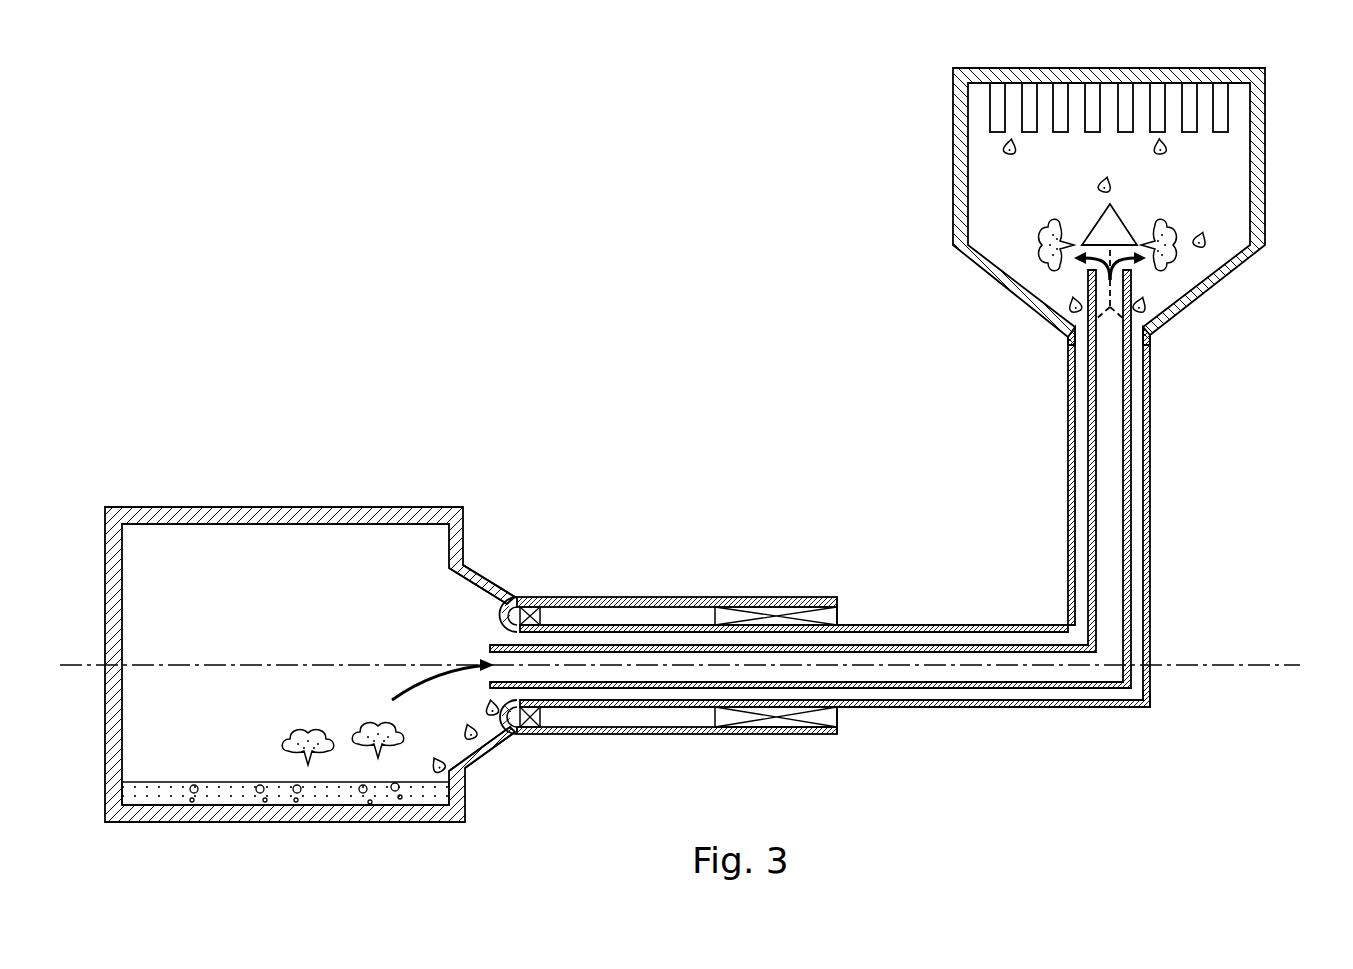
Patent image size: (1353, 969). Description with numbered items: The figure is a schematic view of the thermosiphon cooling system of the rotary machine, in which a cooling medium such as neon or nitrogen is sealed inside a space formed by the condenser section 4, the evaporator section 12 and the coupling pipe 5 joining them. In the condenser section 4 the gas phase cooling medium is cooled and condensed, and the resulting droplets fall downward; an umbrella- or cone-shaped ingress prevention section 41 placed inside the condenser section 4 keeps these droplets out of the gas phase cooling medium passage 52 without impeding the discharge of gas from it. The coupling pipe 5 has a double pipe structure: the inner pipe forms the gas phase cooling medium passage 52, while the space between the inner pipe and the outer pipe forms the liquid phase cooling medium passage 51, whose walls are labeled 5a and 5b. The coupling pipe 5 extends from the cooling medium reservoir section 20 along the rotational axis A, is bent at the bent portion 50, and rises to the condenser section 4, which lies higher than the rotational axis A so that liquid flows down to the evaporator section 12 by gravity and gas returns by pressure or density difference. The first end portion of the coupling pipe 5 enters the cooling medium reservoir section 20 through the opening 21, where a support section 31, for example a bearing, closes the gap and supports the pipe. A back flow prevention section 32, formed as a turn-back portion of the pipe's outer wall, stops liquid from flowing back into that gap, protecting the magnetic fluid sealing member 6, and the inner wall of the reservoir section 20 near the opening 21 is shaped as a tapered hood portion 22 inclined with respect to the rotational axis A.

The condenser section 4 is at (1267, 148).
The ingress prevention section 41 is at (1118, 214).
The coupling pipe 5 is at (895, 517).
The outer pipe inner wall 5a is at (1003, 625).
The outer pipe outer wall 5b is at (1150, 555).
The bent portion 50 is at (1148, 709).
The liquid phase cooling medium passage 51 is at (1137, 437).
The gas phase cooling medium passage 52 is at (1107, 390).
The magnetic fluid sealing member 6 is at (828, 617).
The evaporator section 12 is at (284, 507).
The cooling medium reservoir section 20 is at (278, 586).
The opening 21 is at (500, 594).
The tapered hood portion 22 is at (483, 582).
The support section 31 is at (553, 607).
The back flow prevention section 32 is at (492, 742).
The rotational axis A is at (1193, 667).